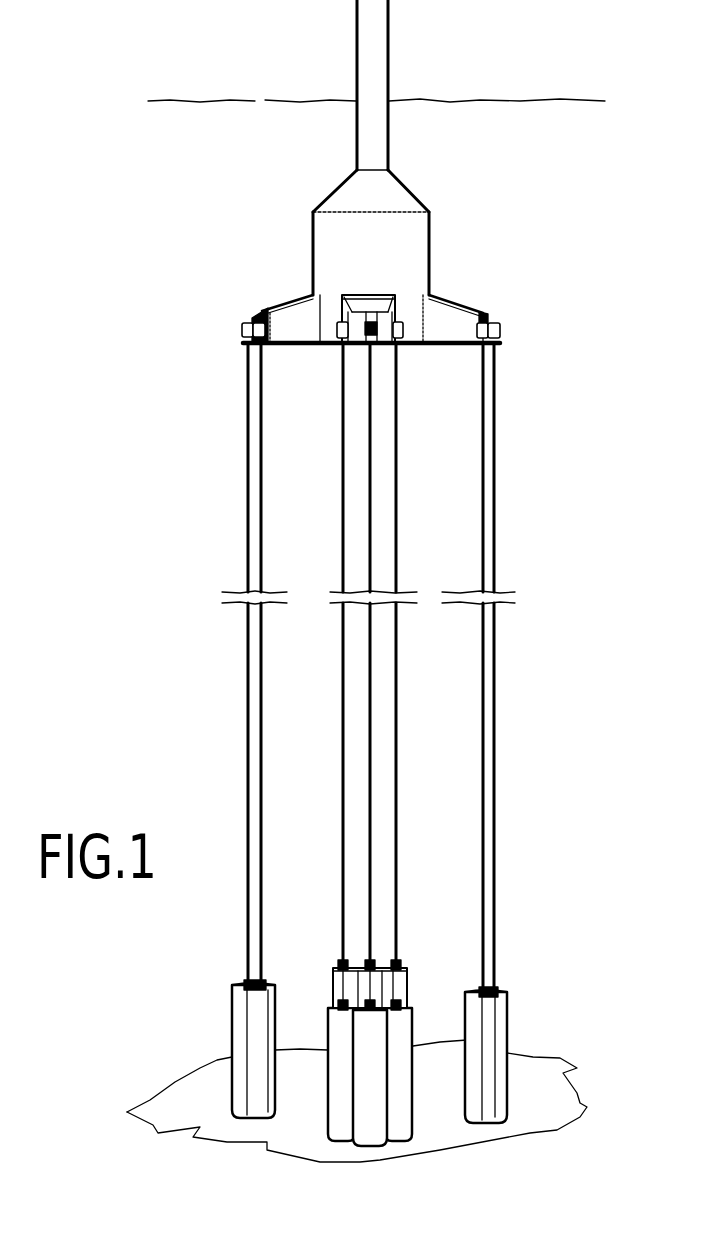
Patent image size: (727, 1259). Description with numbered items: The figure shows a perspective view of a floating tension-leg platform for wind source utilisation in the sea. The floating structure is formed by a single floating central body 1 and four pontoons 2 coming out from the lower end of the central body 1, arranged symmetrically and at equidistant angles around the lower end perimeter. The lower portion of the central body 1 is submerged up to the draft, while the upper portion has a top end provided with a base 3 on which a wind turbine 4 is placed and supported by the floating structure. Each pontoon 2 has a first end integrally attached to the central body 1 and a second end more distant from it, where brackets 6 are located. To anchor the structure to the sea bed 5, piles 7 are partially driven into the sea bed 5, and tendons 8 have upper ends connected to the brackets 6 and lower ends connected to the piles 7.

The central body 1 is at (353, 242).
The pontoons 2 is at (307, 308).
The base 3 is at (398, 202).
The wind turbine 4 is at (372, 73).
The sea bed 5 is at (195, 1085).
The brackets 6 is at (243, 328).
The piles 7 is at (340, 1085).
The tendons 8 is at (397, 523).